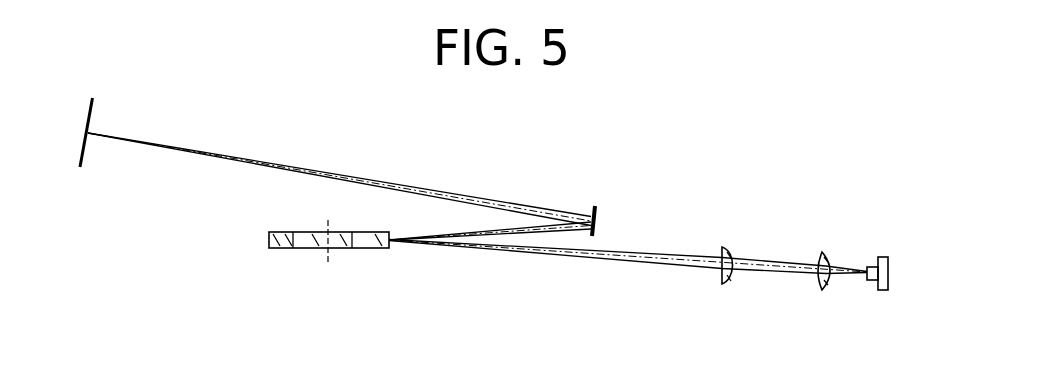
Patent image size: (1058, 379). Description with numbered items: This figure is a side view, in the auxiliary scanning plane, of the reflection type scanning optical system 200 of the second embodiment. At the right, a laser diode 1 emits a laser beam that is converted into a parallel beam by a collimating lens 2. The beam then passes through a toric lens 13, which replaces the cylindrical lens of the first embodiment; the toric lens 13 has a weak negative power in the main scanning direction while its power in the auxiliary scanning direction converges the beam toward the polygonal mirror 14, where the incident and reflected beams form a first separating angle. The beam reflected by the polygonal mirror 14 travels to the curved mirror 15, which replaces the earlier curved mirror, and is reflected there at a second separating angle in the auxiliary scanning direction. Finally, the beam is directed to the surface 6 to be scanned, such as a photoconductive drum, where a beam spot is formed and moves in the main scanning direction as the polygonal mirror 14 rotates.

The reflection type scanning optical system 200 is at (688, 99).
The laser diode 1 is at (884, 290).
The collimating lens 2 is at (825, 290).
The toric lens 13 is at (728, 285).
The optical element (wave plate) 14 is at (367, 243).
The curved mirror 15 is at (597, 208).
The surface to be scanned 6 is at (83, 157).